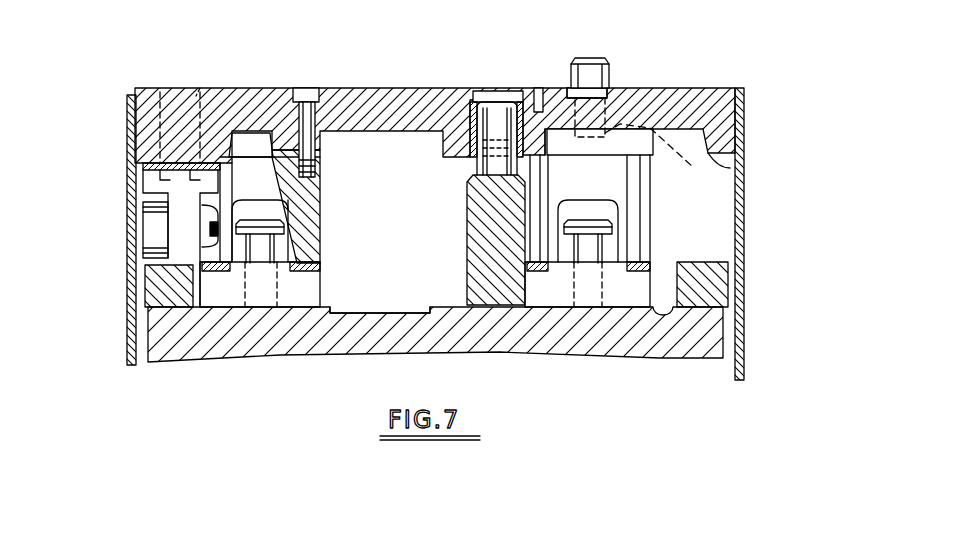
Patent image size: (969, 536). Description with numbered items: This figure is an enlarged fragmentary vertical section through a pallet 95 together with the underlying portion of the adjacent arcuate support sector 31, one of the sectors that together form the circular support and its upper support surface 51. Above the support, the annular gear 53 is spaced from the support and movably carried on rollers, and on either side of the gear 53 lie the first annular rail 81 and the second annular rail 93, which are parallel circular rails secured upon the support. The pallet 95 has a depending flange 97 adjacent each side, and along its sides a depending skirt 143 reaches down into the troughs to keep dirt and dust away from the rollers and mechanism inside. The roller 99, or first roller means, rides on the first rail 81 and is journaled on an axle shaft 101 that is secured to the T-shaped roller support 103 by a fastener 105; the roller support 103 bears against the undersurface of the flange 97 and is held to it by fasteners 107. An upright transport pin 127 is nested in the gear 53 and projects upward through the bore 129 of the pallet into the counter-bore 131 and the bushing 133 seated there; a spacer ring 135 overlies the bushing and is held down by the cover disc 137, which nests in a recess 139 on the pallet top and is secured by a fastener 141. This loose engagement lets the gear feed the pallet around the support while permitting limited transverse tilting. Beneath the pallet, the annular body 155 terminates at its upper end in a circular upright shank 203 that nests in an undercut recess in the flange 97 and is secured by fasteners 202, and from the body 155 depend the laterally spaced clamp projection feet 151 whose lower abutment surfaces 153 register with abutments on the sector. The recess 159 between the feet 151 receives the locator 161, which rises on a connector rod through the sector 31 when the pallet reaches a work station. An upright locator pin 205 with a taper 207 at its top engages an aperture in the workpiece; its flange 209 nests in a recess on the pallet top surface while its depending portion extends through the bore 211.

The arcuate support sector 31 is at (677, 352).
The upper support surface 51 is at (443, 307).
The annular gear 53 is at (477, 268).
The first annular rail 81 is at (158, 290).
The second annular rail 93 is at (697, 270).
The pallet 95 is at (700, 84).
The depending flange 97 is at (178, 130).
The roller 99 is at (152, 220).
The axle shaft 101 is at (172, 228).
The T-shaped roller support 103 is at (153, 187).
The fastener 105 is at (207, 235).
The fasteners 107 is at (200, 88).
The transport pin 127 is at (487, 167).
The bore 129 is at (477, 155).
The counter-bore 131 is at (465, 128).
The bushing 133 is at (468, 132).
The spacer ring 135 is at (497, 107).
The cover disc 137 is at (462, 92).
The recess 139 is at (543, 150).
The fastener 141 is at (537, 100).
The depending skirt 143 is at (128, 342).
The clamp projection feet 151 is at (300, 248).
The abutment surface 153 is at (620, 262).
The annular body 155 is at (300, 190).
The recess 159 is at (590, 220).
The locator 161 is at (258, 222).
The fasteners 202 is at (309, 112).
The upright shank 203 is at (282, 153).
The locator pin 205 is at (606, 70).
The taper 207 is at (593, 57).
The flange 209 is at (637, 94).
The bore 211 is at (657, 159).